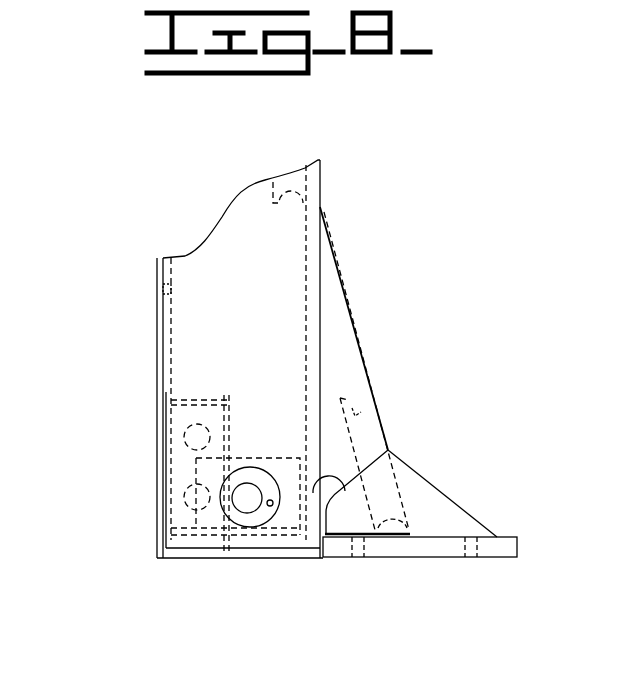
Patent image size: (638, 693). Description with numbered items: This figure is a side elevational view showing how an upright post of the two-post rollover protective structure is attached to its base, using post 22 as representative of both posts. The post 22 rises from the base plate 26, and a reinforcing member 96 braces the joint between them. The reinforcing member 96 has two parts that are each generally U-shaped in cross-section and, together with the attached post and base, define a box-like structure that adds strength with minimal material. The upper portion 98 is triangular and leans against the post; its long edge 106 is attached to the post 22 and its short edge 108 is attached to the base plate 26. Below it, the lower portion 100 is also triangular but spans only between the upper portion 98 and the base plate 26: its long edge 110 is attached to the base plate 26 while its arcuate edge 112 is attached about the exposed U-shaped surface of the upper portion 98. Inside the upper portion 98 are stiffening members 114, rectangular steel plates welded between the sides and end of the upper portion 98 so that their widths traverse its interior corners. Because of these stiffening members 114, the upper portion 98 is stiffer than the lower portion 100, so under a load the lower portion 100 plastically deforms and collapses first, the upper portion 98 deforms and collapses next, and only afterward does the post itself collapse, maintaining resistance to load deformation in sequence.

The post 22 is at (157, 325).
The base plate 26 is at (425, 558).
The reinforcing member 96 is at (430, 290).
The upper portion 98 is at (335, 250).
The lower portion 100 is at (437, 485).
The long edge 106 is at (305, 312).
The short edge 108 is at (353, 558).
The long edge 110 is at (452, 558).
The arcuate edge 112 is at (313, 493).
The stiffening members 114 is at (387, 443).